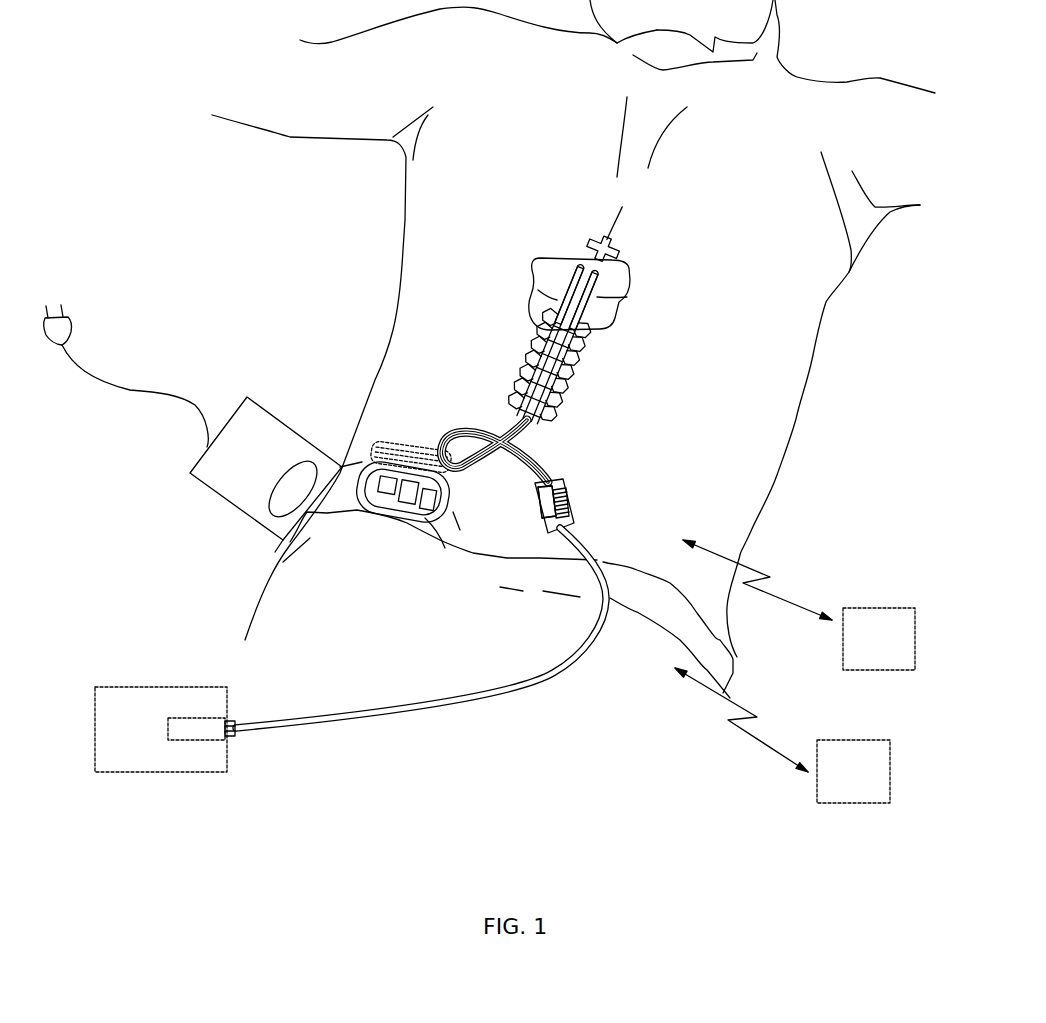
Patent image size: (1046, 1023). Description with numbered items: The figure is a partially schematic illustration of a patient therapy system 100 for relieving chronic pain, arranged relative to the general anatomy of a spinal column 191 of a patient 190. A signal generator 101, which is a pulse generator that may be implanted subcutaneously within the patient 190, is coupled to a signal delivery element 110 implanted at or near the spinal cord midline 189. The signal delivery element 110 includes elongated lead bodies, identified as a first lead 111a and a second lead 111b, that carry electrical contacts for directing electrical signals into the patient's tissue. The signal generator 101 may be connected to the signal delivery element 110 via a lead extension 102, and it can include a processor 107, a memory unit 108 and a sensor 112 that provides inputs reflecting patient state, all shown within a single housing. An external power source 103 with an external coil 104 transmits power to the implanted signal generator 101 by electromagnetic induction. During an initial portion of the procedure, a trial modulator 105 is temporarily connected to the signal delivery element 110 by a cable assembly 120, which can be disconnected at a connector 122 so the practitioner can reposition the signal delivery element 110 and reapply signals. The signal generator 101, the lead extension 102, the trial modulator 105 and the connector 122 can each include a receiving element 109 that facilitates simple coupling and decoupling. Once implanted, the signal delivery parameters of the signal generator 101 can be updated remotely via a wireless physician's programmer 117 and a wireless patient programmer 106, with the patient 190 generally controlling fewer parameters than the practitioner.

The patient therapy system 100 is at (196, 290).
The signal generator 101 is at (455, 481).
The lead extension 102 is at (478, 425).
The external power source 103 is at (262, 398).
The external coil 104 is at (265, 512).
The trial modulator 105 is at (150, 687).
The patient programmer 106 is at (882, 607).
The processor 107 is at (383, 513).
The memory unit 108 is at (453, 548).
The receiving element 109 is at (553, 482).
The signal delivery element 110 is at (528, 242).
The first lead 111a is at (562, 300).
The second lead 111b is at (600, 299).
The sensor 112 is at (460, 530).
The physician's programmer 117 is at (857, 738).
The cable assembly 120 is at (512, 735).
The connector 122 is at (568, 490).
The spinal cord midline 189 is at (614, 205).
The patient 190 is at (777, 426).
The spinal column 191 is at (592, 394).